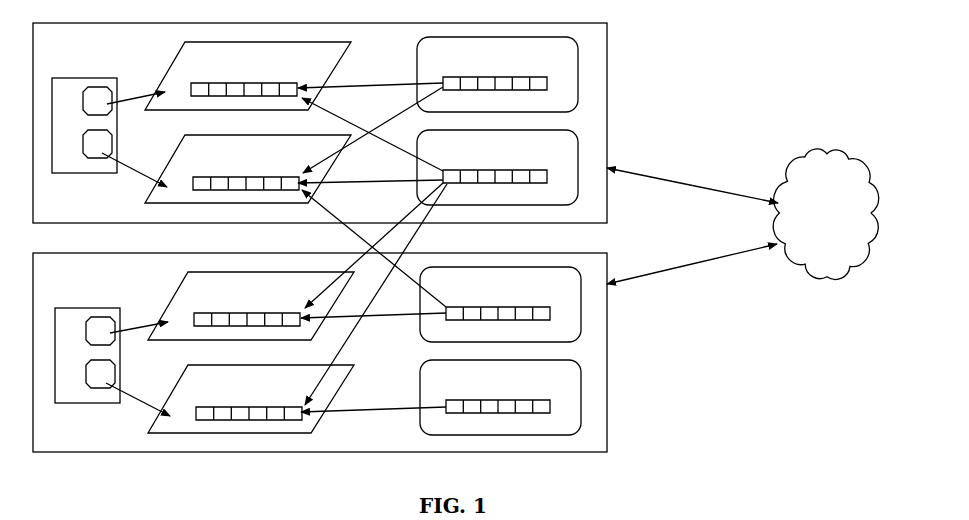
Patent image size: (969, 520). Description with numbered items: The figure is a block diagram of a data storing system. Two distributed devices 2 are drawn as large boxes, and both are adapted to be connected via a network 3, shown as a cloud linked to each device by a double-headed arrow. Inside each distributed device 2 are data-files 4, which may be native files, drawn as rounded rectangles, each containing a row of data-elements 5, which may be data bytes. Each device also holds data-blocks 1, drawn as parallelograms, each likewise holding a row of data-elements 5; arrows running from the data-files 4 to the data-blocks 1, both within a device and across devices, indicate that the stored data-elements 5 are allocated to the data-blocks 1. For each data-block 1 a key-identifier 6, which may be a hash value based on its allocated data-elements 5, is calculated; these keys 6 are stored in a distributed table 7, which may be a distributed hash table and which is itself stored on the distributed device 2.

The data-block 1 is at (168, 65).
The distributed device 2 is at (607, 80).
The network 3 is at (803, 160).
The data-file 4 is at (417, 79).
The data-element 5 is at (377, 234).
The key-identifier 6 is at (83, 106).
The distributed table 7 is at (77, 78).